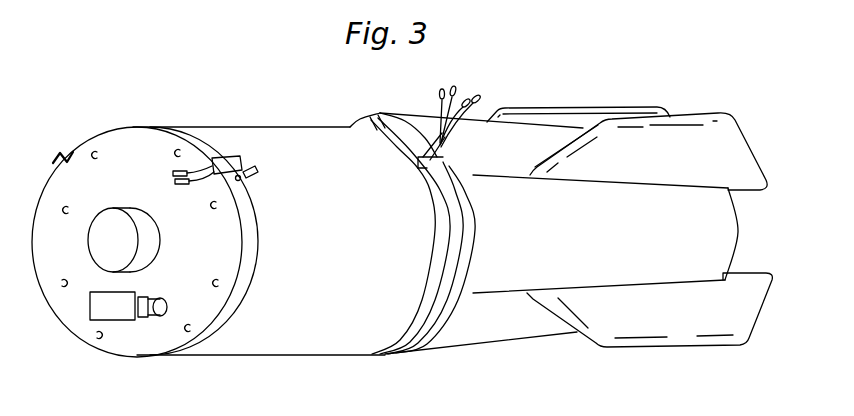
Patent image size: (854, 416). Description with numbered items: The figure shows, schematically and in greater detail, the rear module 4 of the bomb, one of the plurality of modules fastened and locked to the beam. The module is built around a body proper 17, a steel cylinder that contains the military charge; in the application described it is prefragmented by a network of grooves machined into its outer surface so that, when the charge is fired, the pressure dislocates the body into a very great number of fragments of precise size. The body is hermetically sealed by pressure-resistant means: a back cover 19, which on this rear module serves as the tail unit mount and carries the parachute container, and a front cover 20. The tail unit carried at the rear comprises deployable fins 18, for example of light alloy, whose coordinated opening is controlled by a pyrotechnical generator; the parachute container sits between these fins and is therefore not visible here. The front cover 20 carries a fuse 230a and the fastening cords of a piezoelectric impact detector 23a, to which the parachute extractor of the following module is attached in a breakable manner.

The rear module 4 is at (358, 355).
The body proper 17 is at (297, 355).
The deployable fins 18 is at (687, 323).
The back cover 19 is at (423, 313).
The front cover 20 is at (192, 338).
The piezoelectric impact detector 23a is at (102, 312).
The fuse 230a is at (107, 257).